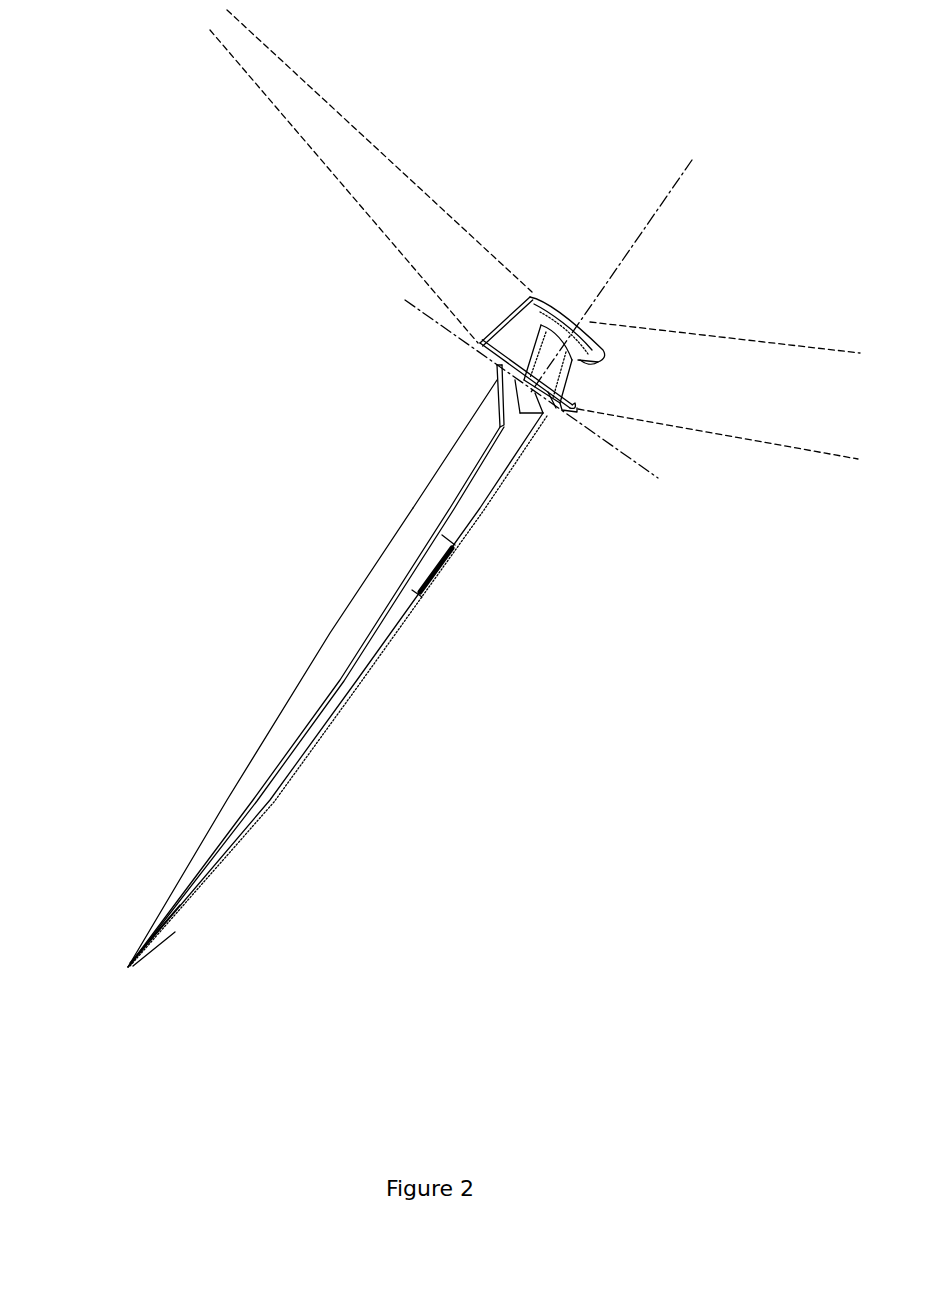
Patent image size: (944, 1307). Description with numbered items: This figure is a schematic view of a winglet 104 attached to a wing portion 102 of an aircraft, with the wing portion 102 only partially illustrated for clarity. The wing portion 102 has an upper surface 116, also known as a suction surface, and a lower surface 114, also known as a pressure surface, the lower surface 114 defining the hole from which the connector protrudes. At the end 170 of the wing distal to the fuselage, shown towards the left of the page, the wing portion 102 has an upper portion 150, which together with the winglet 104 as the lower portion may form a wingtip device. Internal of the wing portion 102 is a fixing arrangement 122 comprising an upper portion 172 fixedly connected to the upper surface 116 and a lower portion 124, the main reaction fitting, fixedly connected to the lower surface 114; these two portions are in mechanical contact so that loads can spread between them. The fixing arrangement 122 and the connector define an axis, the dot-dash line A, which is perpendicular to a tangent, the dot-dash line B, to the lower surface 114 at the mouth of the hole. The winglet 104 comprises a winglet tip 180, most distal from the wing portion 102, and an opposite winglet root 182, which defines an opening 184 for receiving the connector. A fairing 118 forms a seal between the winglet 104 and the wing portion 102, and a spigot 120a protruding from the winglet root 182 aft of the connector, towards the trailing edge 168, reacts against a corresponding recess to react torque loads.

The wing portion 102 is at (528, 292).
The winglet 104 is at (325, 660).
The lower surface 114 is at (755, 441).
The upper surface 116 is at (770, 343).
The fairing 118 is at (493, 397).
The spigot 120a is at (505, 413).
The fixing arrangement 122 is at (558, 318).
The lower portion 124 is at (556, 385).
The upper portion 150 is at (338, 137).
The trailing edge 168 is at (247, 822).
The end 170 is at (281, 60).
The upper portion 172 is at (590, 338).
The winglet tip 180 is at (128, 968).
The winglet root 182 is at (497, 372).
The opening 184 is at (548, 417).
The axis A is at (615, 265).
The tangent B is at (540, 398).